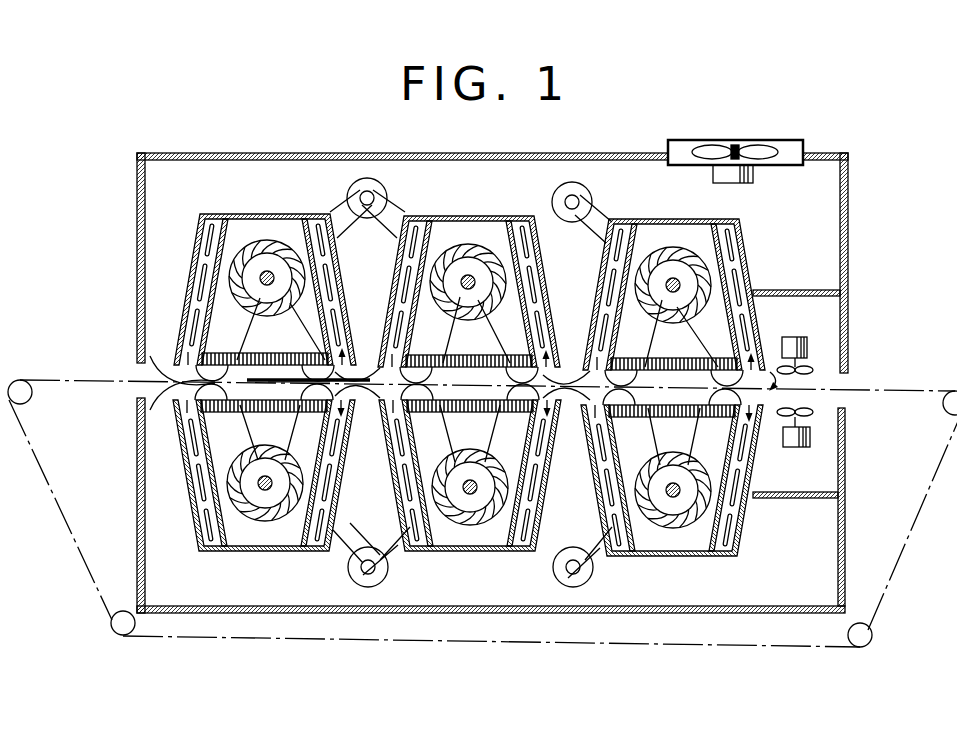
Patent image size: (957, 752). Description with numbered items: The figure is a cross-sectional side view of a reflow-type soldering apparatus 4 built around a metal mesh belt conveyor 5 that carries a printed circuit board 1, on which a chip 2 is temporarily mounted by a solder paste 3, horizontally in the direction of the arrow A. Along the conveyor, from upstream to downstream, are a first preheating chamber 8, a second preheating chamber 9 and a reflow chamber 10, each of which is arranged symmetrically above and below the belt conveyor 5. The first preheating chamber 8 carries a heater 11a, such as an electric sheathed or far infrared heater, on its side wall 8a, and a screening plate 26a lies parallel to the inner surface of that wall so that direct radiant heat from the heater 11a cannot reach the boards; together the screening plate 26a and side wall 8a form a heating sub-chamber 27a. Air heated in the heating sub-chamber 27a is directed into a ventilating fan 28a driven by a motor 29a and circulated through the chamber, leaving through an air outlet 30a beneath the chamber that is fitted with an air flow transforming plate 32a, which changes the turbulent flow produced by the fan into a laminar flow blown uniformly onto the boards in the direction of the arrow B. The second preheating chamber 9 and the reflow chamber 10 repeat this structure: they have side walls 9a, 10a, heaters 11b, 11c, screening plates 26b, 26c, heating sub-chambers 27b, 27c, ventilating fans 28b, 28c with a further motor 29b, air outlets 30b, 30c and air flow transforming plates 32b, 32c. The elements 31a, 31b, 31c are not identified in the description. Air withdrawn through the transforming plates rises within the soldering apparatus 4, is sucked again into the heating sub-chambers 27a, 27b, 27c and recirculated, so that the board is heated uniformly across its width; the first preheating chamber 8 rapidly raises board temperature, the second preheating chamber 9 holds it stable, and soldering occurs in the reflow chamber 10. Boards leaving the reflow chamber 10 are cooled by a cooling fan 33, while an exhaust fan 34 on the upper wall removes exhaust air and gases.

The printed circuit board 1 is at (256, 378).
The chip 2 is at (286, 378).
The solder paste 3 is at (325, 384).
The soldering apparatus 4 is at (566, 151).
The belt conveyor 5 is at (861, 388).
The first preheating chamber 8 is at (267, 381).
The side wall 8a is at (203, 245).
The second preheating chamber 9 is at (469, 385).
The side wall 9a is at (402, 262).
The reflow chamber 10 is at (677, 390).
The side wall 10a is at (600, 316).
The heater 11a is at (208, 228).
The heater 11b is at (418, 228).
The heater 11c is at (617, 228).
The screening plate 26a is at (185, 325).
The screening plate 26b is at (505, 562).
The screening plate 26c is at (730, 574).
The heating sub-chamber 27a is at (196, 305).
The heating sub-chamber 27b is at (402, 312).
The heating sub-chamber 27c is at (558, 318).
The ventilating fan 28a is at (245, 242).
The ventilating fan 28b is at (462, 245).
The ventilating fan 28c is at (686, 250).
The motor 29a is at (371, 186).
The motor 29b is at (573, 188).
The air outlet 30a is at (294, 347).
The air outlet 30b is at (489, 352).
The air outlet 30c is at (691, 354).
The lower perforated side plate 31a is at (180, 405).
The lower perforated side plate 31b is at (395, 500).
The lower perforated side plate 31c is at (612, 505).
The air flow transforming plate 32a is at (275, 408).
The air flow transforming plate 32b is at (472, 410).
The air flow transforming plate 32c is at (676, 412).
The cooling fan 33 is at (808, 362).
The exhaust fan 34 is at (758, 143).
The conveying direction A is at (76, 363).
The air blowing direction B is at (471, 389).